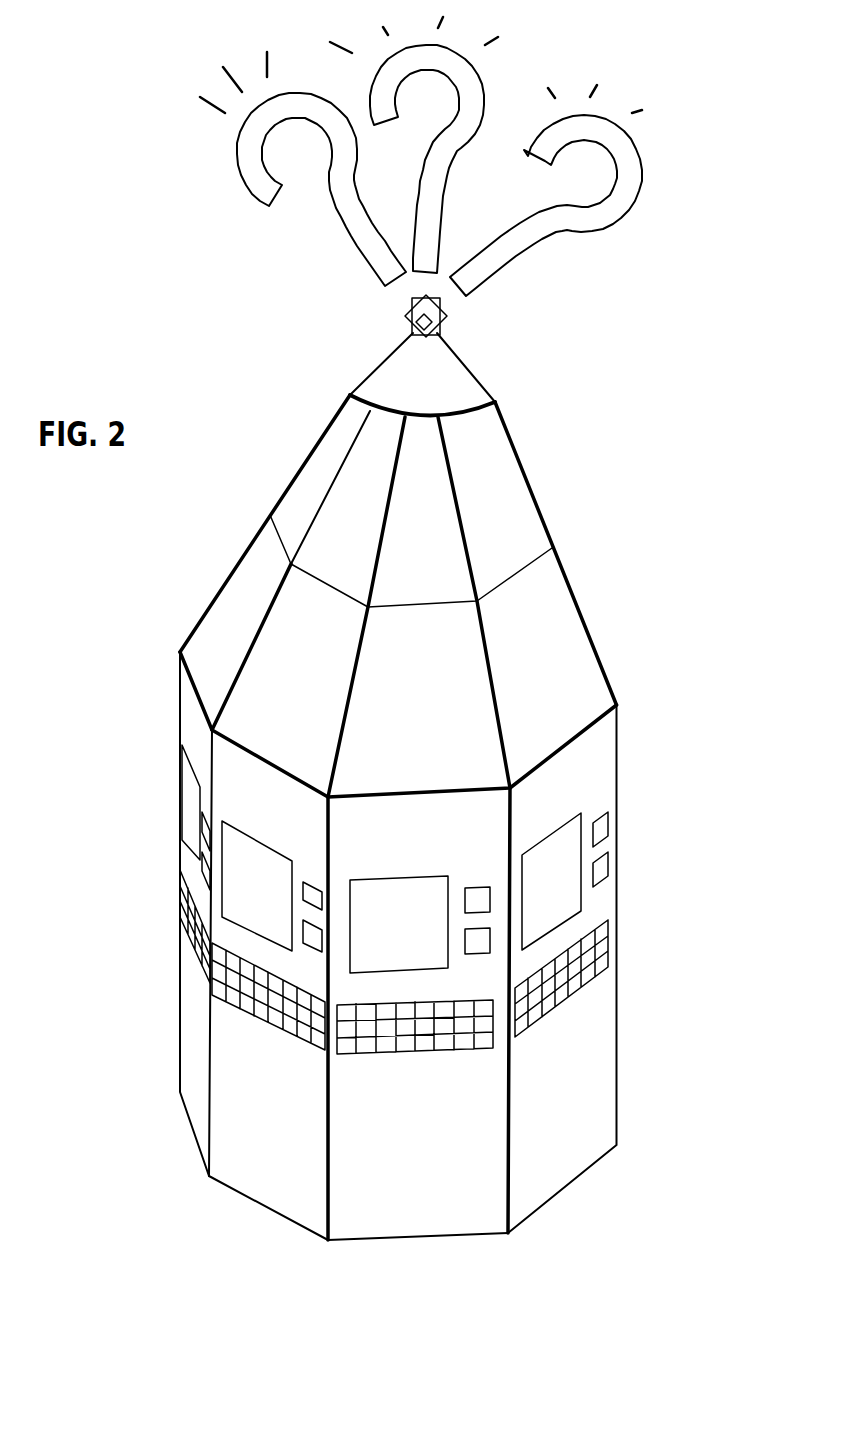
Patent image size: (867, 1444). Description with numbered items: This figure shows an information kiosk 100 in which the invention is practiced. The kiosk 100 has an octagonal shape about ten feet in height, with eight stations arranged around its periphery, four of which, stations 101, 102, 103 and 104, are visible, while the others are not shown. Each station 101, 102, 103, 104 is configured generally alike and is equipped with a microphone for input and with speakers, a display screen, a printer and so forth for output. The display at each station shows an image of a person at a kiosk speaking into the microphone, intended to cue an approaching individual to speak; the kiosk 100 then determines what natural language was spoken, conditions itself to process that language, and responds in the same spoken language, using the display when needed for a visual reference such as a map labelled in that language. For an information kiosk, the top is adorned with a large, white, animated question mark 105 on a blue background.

The kiosk 100 is at (421, 845).
The station 101 is at (183, 1138).
The station 102 is at (257, 1215).
The station 103 is at (413, 1255).
The station 104 is at (573, 1212).
The animated question mark 105 is at (457, 318).